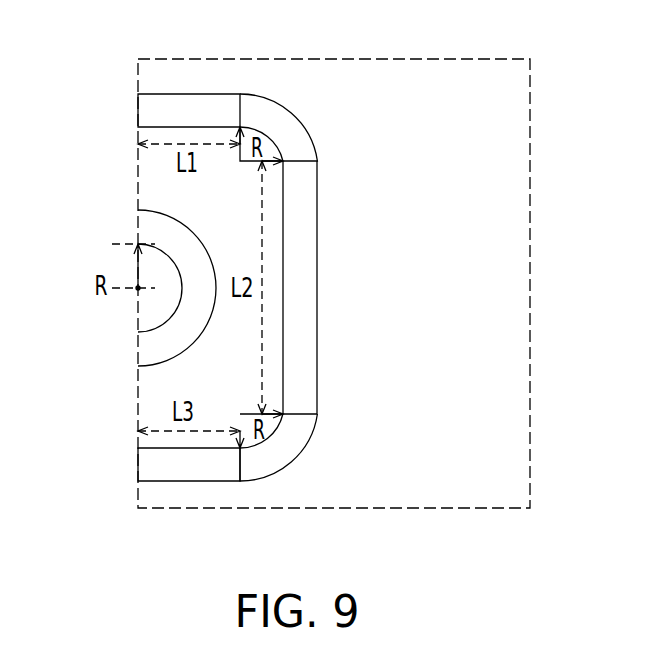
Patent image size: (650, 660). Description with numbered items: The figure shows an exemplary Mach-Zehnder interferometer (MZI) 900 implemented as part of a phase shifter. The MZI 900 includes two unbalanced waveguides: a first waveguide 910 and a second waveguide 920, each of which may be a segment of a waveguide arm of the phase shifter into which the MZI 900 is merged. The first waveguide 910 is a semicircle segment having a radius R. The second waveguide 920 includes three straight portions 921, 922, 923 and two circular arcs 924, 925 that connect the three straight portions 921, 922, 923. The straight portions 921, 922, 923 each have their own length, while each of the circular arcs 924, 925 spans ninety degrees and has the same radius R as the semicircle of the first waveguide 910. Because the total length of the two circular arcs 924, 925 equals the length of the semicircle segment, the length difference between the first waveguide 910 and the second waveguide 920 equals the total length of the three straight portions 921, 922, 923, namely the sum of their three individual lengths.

The Mach-Zehnder interferometer (MZI) 900 is at (463, 59).
The first waveguide 910 is at (145, 220).
The second waveguide 920 is at (227, 292).
The straight portion 921 is at (192, 103).
The straight portion 922 is at (303, 283).
The straight portion 923 is at (182, 468).
The circular arc 924 is at (284, 122).
The circular arc 925 is at (290, 447).